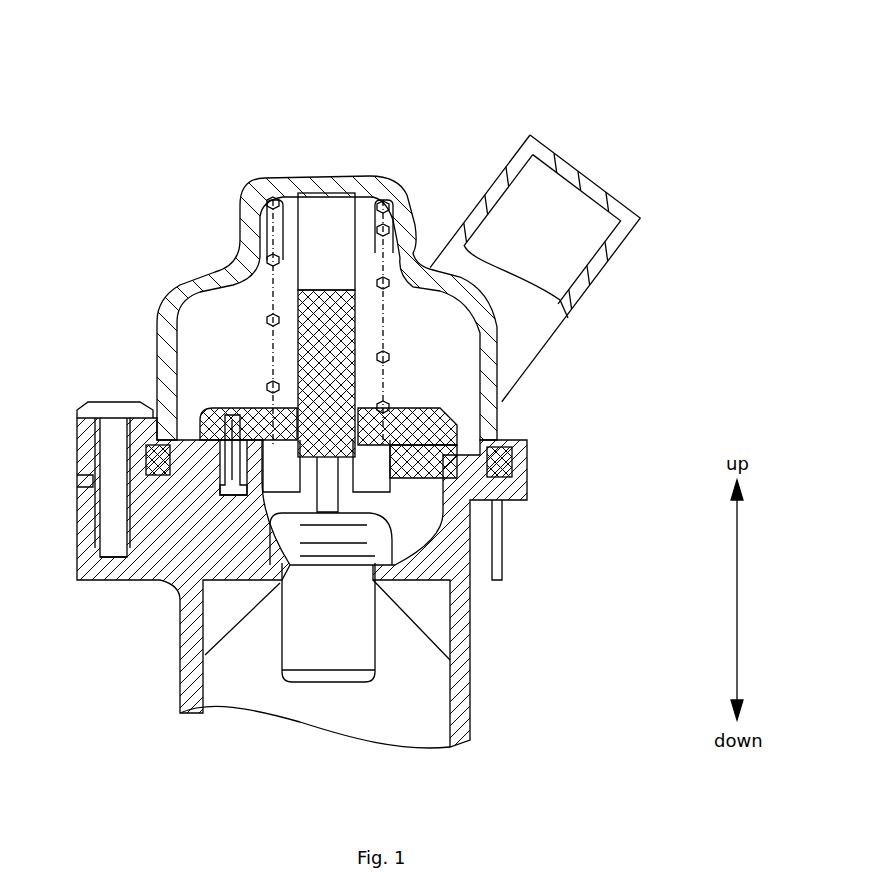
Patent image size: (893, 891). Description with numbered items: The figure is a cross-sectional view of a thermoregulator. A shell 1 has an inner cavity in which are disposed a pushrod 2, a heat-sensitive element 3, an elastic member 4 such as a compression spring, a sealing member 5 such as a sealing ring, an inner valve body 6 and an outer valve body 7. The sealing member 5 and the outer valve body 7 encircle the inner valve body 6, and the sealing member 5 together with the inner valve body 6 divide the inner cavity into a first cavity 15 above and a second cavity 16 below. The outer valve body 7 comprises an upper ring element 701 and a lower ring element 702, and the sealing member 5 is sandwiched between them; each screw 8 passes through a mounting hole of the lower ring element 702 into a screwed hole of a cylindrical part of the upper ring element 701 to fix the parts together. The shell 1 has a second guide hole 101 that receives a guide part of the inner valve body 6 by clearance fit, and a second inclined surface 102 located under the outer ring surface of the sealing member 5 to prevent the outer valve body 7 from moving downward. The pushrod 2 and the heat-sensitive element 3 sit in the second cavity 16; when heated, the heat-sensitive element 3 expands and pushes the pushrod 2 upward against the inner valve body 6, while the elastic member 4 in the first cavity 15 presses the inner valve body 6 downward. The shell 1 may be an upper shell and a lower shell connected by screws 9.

The shell 1 is at (490, 373).
The pushrod 2 is at (330, 493).
The heat-sensitive element 3 is at (330, 608).
The elastic member 4 is at (330, 355).
The sealing member 5 is at (480, 458).
The inner valve body 6 is at (317, 360).
The outer valve body 7 is at (663, 424).
The screw 8 is at (222, 497).
The screws 9 is at (110, 430).
The first cavity 15 is at (440, 360).
The second cavity 16 is at (248, 522).
The second guide hole 101 is at (333, 250).
The second inclined surface 102 is at (150, 490).
The upper ring element 701 is at (205, 420).
The lower ring element 702 is at (455, 470).